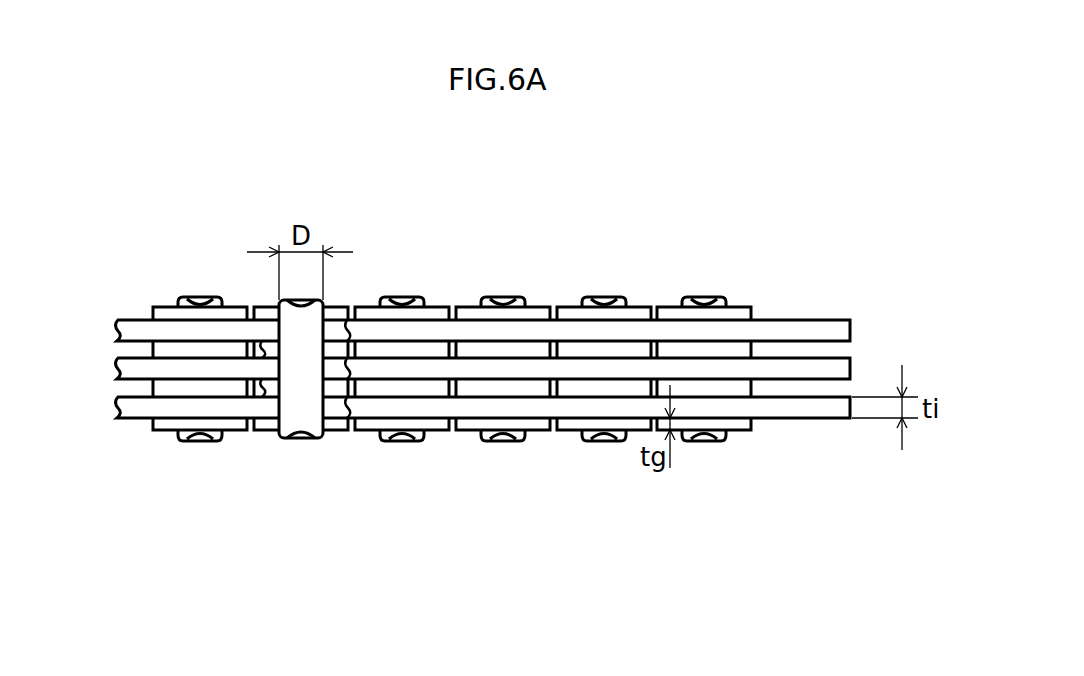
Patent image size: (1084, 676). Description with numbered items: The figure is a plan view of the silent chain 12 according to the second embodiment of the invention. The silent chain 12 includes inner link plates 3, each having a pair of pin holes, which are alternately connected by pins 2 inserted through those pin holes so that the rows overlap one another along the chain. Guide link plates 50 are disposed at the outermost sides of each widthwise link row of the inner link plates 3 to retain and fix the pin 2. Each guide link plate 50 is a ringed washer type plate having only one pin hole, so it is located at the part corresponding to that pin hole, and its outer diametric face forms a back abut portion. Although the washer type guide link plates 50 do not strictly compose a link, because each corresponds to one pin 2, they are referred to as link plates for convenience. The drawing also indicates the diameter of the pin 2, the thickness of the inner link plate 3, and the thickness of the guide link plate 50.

The silent chain 12 is at (491, 344).
The guide link plate 50 is at (637, 307).
The inner link plate 3 is at (152, 345).
The pin 2 is at (303, 441).